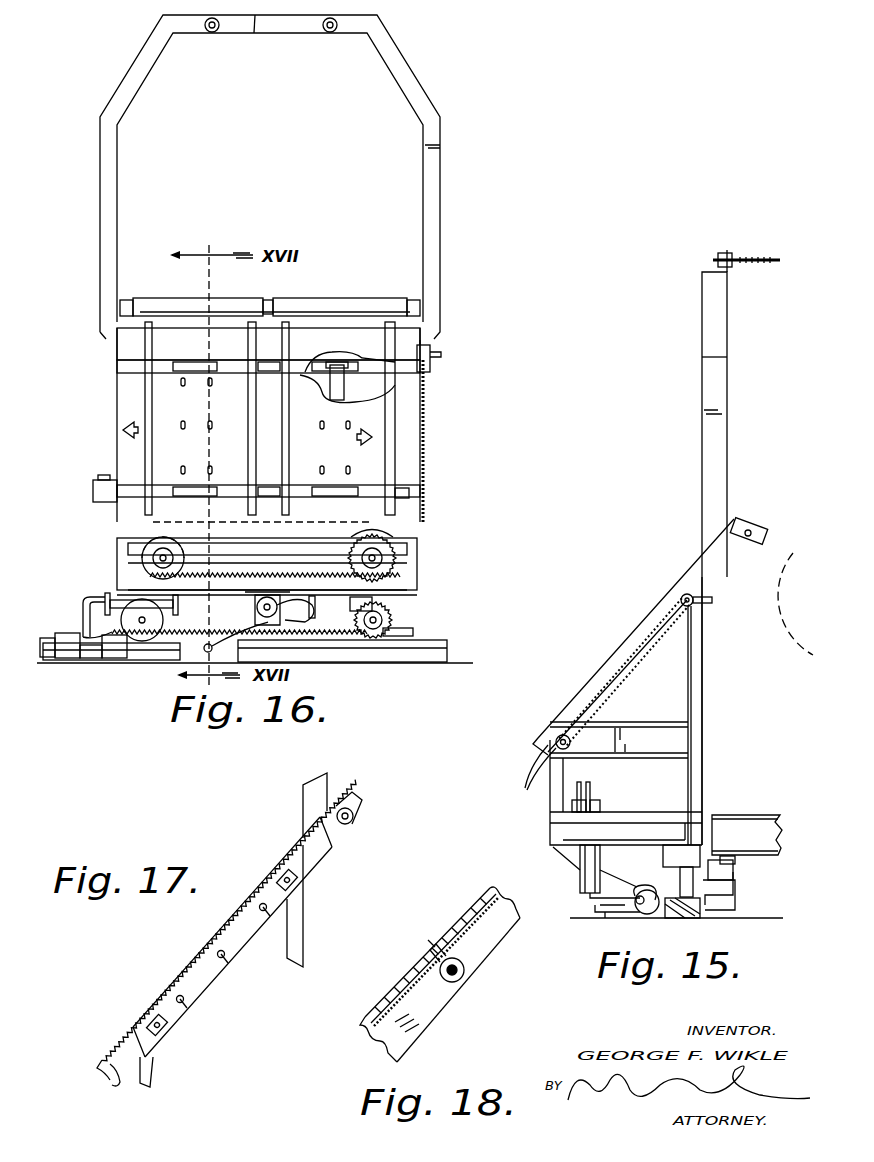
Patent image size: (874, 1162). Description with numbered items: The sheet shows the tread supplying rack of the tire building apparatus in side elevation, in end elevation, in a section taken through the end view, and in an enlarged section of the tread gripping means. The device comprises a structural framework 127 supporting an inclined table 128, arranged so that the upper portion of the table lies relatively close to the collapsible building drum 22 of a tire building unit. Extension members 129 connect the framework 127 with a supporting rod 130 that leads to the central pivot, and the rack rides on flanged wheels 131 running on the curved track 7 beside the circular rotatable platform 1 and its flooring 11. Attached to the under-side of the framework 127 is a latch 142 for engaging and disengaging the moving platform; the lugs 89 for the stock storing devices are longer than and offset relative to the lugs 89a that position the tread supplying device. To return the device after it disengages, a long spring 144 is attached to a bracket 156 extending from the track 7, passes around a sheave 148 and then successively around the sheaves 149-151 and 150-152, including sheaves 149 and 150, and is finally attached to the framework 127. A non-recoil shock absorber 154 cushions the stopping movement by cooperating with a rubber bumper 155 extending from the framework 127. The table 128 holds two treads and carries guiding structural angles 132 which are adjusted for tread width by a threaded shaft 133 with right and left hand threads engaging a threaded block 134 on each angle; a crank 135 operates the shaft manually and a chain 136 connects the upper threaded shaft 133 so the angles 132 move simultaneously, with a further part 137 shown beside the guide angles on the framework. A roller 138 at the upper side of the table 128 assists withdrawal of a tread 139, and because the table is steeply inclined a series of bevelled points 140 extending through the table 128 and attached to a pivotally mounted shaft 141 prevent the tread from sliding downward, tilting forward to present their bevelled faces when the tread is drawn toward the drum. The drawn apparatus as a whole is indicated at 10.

In FIG. 15, the circular rotatable platform 1 is at (767, 879).
In FIG. 16, the curved track 7 is at (447, 642).
In FIG. 15, the curved track 7 is at (682, 903).
In FIG. 16, the apparatus 10 is at (460, 230).
In FIG. 15, the flooring 11 is at (763, 799).
In FIG. 15, the collapsible building drum 22 is at (812, 552).
In FIG. 15, the lug 89 is at (723, 860).
In FIG. 15, the lug 89a is at (718, 873).
In FIG. 16, the structural framework 127 is at (413, 563).
In FIG. 17, the structural framework 127 is at (297, 928).
In FIG. 15, the structural framework 127 is at (693, 682).
In FIG. 16, the inclined table 128 is at (375, 463).
In FIG. 17, the inclined table 128 is at (217, 935).
In FIG. 18, the inclined table 128 is at (367, 1030).
In FIG. 15, the inclined table 128 is at (540, 757).
In FIG. 16, the extension members 129 is at (430, 173).
In FIG. 17, the extension members 129 is at (303, 791).
In FIG. 15, the extension members 129 is at (712, 383).
In FIG. 15, the supporting rod 130 is at (772, 243).
In FIG. 16, the flanged wheels 131 is at (396, 660).
In FIG. 16, the structural angles 132 is at (372, 336).
In FIG. 17, the structural angles 132 is at (270, 870).
In FIG. 15, the structural angles 132 is at (638, 627).
In FIG. 16, the threaded shaft 133 is at (410, 390).
In FIG. 16, the threaded block 134 is at (373, 413).
In FIG. 16, the crank 135 is at (442, 344).
In FIG. 15, the crank 135 is at (700, 604).
In FIG. 16, the chain 136 is at (427, 433).
In FIG. 15, the chain 136 is at (613, 668).
In FIG. 16, the bracket 137 is at (397, 497).
In FIG. 16, the roller 138 is at (300, 292).
In FIG. 17, the roller 138 is at (355, 818).
In FIG. 15, the roller 138 is at (757, 511).
In FIG. 17, the tread 139 is at (172, 1003).
In FIG. 18, the tread 139 is at (438, 922).
In FIG. 17, the bevelled points 140 is at (266, 912).
In FIG. 18, the bevelled points 140 is at (431, 972).
In FIG. 17, the shaft 141 is at (222, 960).
In FIG. 18, the shaft 141 is at (465, 970).
In FIG. 16, the latch 142 is at (245, 617).
In FIG. 15, the latch 142 is at (756, 912).
In FIG. 16, the long spring 144 is at (170, 638).
In FIG. 16, the sheave 148 is at (413, 608).
In FIG. 15, the sheave 148 is at (582, 872).
In FIG. 15, the sheave 149 is at (590, 793).
In FIG. 15, the sheave 150 is at (578, 778).
In FIG. 16, the sheaves 149-151 is at (417, 533).
In FIG. 16, the sheaves 150-152 is at (140, 560).
In FIG. 16, the non-recoil shock absorber 154 is at (89, 586).
In FIG. 15, the non-recoil shock absorber 154 is at (600, 910).
In FIG. 16, the rubber bumper 155 is at (312, 612).
In FIG. 16, the bracket 156 is at (92, 650).